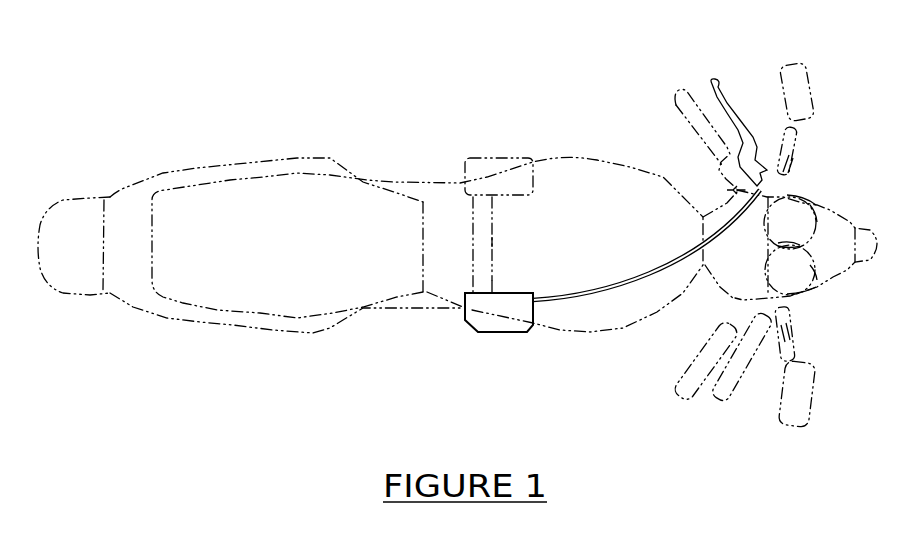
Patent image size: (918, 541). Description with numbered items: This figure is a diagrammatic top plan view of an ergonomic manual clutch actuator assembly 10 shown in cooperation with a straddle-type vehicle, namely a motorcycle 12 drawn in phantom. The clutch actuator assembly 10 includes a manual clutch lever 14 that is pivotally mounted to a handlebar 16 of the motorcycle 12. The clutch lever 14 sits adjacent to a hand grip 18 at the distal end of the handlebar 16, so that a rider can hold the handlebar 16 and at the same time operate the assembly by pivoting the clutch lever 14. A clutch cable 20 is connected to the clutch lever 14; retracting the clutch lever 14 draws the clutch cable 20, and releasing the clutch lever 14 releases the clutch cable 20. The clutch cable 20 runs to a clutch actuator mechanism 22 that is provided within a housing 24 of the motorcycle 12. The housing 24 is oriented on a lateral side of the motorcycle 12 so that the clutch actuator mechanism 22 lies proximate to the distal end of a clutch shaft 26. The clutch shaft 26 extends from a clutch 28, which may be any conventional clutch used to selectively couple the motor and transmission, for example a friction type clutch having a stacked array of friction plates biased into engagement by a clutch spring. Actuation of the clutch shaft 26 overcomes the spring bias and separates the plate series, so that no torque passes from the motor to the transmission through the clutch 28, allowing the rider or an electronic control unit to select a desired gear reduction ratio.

The ergonomic manual clutch actuator assembly 10 is at (626, 413).
The motorcycle 12 is at (853, 222).
The manual clutch lever 14 is at (715, 79).
The handlebar 16 is at (728, 189).
The hand grip 18 is at (671, 98).
The clutch cable 20 is at (650, 282).
The clutch actuator mechanism 22 is at (467, 369).
The housing 24 is at (473, 333).
The clutch shaft 26 is at (494, 242).
The clutch 28 is at (503, 157).